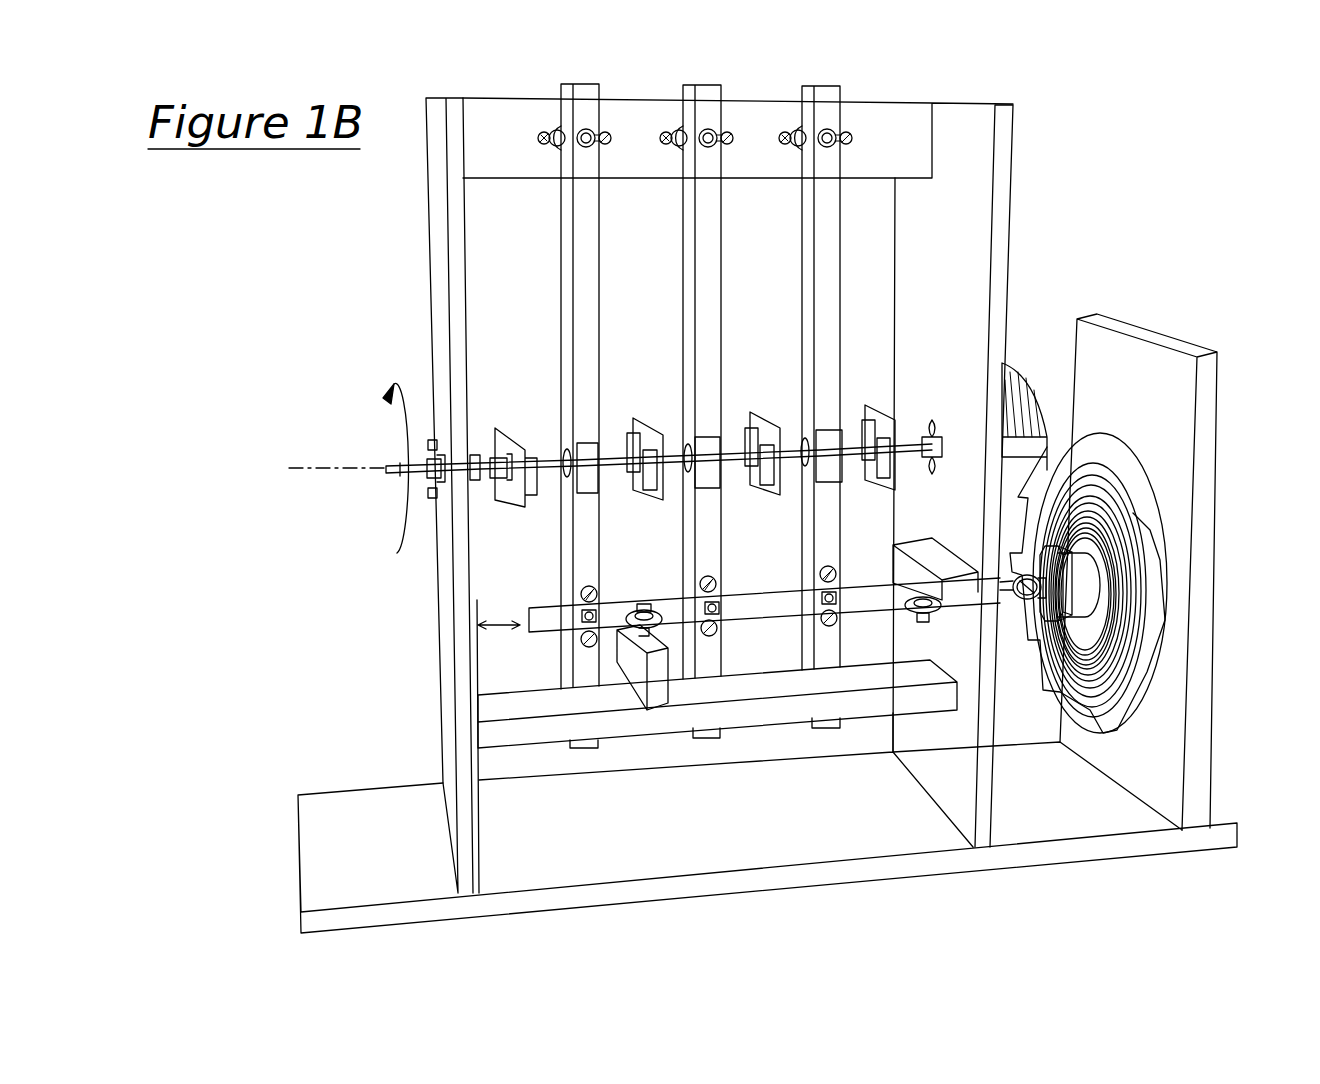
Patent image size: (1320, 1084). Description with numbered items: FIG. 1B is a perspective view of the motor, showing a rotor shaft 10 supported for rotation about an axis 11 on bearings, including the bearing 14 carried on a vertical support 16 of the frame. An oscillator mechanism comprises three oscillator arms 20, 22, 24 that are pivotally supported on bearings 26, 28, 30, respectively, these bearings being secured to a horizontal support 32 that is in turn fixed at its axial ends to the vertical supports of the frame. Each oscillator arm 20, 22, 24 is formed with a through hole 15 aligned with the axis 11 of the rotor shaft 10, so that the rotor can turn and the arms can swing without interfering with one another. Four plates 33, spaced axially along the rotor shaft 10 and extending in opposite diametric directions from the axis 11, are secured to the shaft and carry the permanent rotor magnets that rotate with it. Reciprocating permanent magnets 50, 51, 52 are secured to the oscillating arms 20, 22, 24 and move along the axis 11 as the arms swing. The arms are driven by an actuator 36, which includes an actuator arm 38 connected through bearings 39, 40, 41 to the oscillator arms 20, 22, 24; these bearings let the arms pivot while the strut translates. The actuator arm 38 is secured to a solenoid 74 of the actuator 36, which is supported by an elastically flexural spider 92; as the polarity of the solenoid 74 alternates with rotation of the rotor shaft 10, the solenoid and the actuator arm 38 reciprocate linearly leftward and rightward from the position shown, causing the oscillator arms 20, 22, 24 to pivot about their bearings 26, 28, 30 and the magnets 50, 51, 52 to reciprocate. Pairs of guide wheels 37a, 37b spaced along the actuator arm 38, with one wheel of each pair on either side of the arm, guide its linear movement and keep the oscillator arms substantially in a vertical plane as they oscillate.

The rotor shaft 10 is at (398, 474).
The axis 11 is at (316, 468).
The bearing 14 is at (925, 435).
The through hole 15 is at (562, 452).
The vertical support 16 is at (1003, 237).
The oscillator arm 20 is at (815, 298).
The oscillator arm 22 is at (700, 290).
The oscillator arm 24 is at (578, 292).
The bearing 26 is at (793, 152).
The bearing 28 is at (672, 153).
The bearing 30 is at (553, 153).
The horizontal support 32 is at (890, 120).
The plate 33 is at (496, 428).
The actuator 36 is at (1060, 413).
The guide wheel 37a is at (921, 614).
The guide wheel 37b is at (628, 628).
The actuator arm 38 is at (760, 614).
The bearing 39 is at (820, 583).
The bearing 40 is at (700, 595).
The bearing 41 is at (580, 600).
The reciprocating magnet 50 is at (840, 480).
The reciprocating magnet 51 is at (718, 483).
The reciprocating magnet 52 is at (597, 486).
The solenoid 74 is at (1090, 593).
The spider 92 is at (1090, 695).